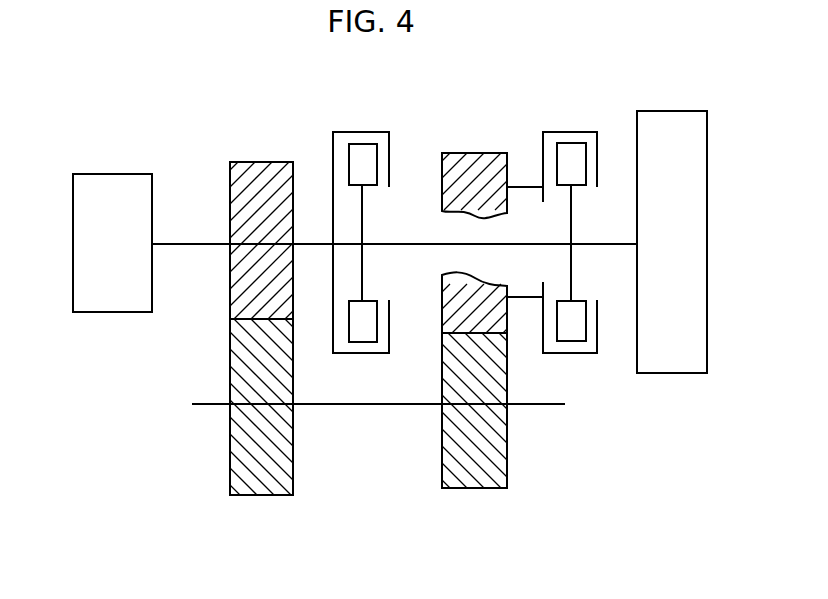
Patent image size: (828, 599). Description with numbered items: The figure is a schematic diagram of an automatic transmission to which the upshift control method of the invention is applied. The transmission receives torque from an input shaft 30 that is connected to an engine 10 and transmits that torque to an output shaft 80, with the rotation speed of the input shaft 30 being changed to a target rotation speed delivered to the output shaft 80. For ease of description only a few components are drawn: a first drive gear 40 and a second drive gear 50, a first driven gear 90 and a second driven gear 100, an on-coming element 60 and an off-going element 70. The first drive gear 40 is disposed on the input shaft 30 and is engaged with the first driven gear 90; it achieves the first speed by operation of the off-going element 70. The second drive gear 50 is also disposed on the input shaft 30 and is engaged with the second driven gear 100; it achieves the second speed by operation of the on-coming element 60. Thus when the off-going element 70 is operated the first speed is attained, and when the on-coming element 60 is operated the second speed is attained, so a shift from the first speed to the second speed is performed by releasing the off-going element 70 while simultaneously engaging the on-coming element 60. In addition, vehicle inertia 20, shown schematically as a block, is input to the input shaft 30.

The engine 10 is at (113, 183).
The vehicle inertia 20 is at (672, 116).
The input shaft 30 is at (190, 243).
The first drive gear 40 is at (476, 153).
The second drive gear 50 is at (264, 162).
The on-coming element 60 is at (376, 132).
The off-going element 70 is at (583, 132).
The output shaft 80 is at (562, 405).
The first driven gear 90 is at (478, 488).
The second driven gear 100 is at (260, 495).